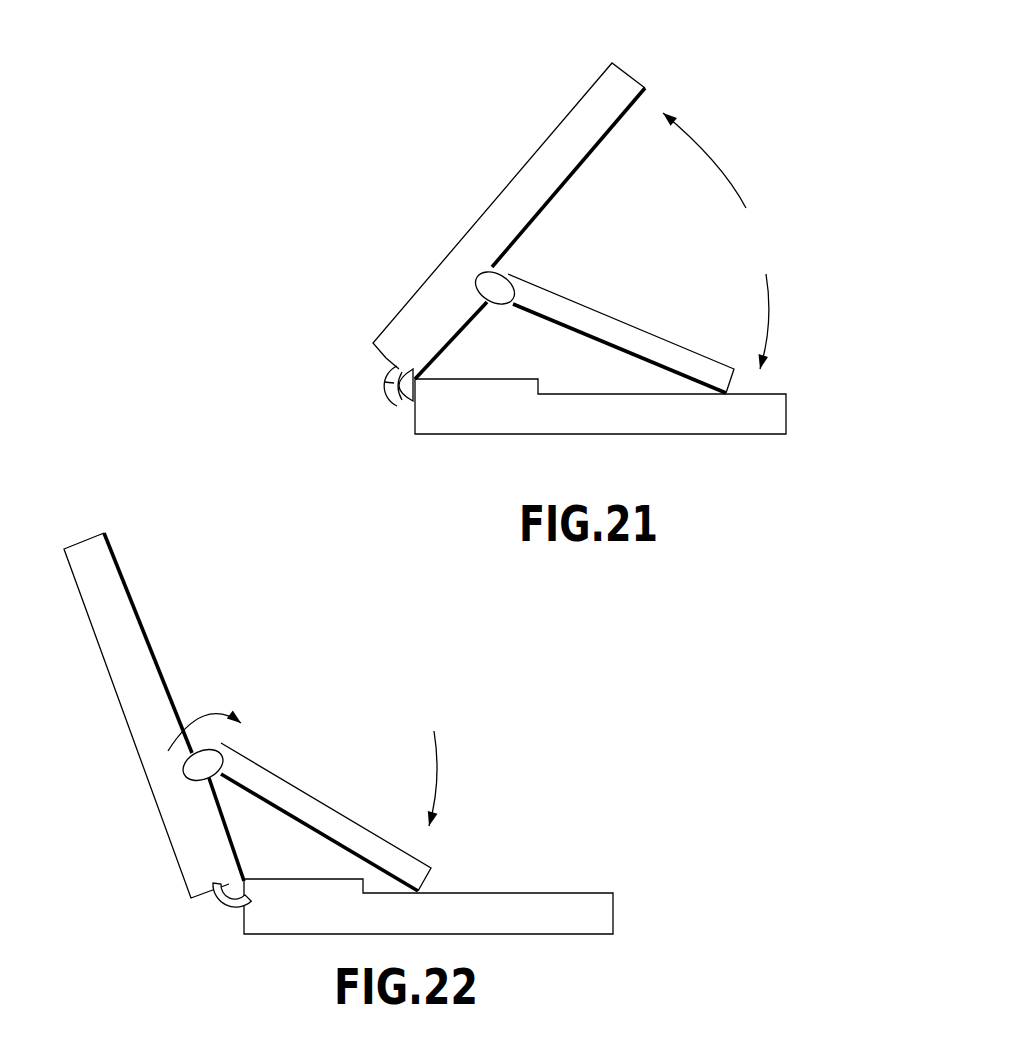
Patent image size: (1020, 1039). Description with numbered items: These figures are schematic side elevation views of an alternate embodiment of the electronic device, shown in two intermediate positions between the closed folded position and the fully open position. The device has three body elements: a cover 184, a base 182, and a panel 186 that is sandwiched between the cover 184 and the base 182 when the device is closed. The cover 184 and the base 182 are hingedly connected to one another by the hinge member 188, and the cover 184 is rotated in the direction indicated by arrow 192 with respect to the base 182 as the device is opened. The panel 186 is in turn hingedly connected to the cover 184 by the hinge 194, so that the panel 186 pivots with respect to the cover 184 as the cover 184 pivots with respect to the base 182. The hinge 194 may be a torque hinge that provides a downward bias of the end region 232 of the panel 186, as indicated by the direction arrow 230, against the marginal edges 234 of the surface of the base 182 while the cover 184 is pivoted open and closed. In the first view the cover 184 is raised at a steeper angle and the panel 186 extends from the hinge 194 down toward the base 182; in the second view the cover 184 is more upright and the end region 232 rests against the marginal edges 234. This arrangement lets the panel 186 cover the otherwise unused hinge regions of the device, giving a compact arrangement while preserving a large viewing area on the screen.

In FIG. 21, the base 182 is at (768, 415).
In FIG. 21, the cover 184 is at (620, 65).
In FIG. 22, the cover 184 is at (93, 545).
In FIG. 21, the panel 186 is at (633, 315).
In FIG. 22, the panel 186 is at (321, 813).
In FIG. 21, the hinge member 188 is at (388, 401).
In FIG. 22, the hinge member 188 is at (216, 898).
In FIG. 21, the arrow 192 is at (711, 153).
In FIG. 22, the hinge 194 is at (186, 763).
In FIG. 21, the direction arrow 230 is at (763, 306).
In FIG. 22, the direction arrow 230 is at (431, 766).
In FIG. 22, the end region 232 is at (425, 868).
In FIG. 22, the marginal edges 234 is at (561, 883).